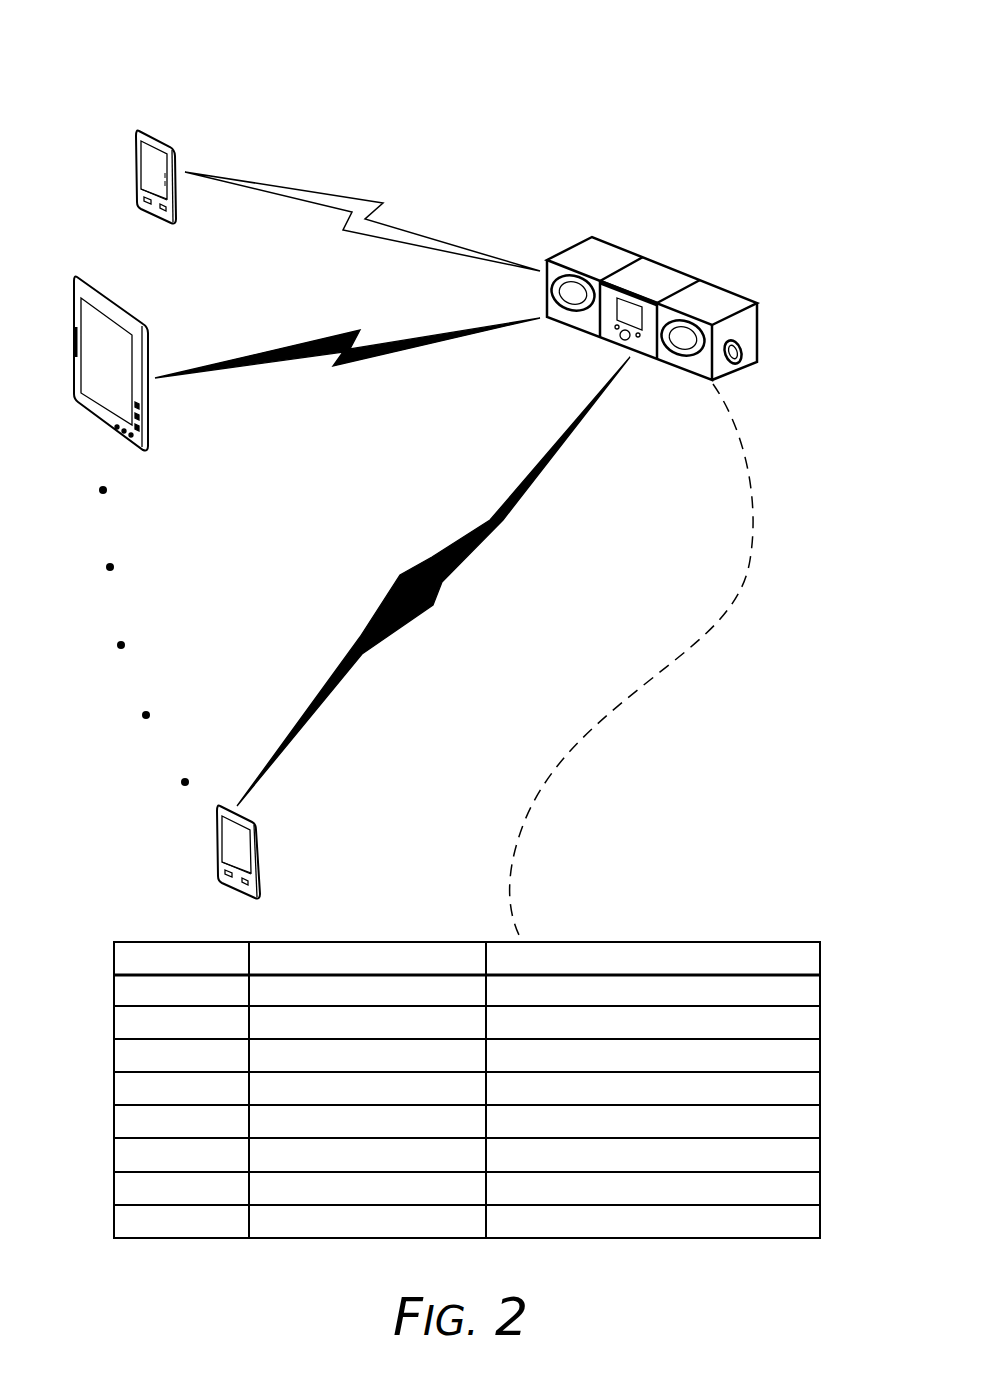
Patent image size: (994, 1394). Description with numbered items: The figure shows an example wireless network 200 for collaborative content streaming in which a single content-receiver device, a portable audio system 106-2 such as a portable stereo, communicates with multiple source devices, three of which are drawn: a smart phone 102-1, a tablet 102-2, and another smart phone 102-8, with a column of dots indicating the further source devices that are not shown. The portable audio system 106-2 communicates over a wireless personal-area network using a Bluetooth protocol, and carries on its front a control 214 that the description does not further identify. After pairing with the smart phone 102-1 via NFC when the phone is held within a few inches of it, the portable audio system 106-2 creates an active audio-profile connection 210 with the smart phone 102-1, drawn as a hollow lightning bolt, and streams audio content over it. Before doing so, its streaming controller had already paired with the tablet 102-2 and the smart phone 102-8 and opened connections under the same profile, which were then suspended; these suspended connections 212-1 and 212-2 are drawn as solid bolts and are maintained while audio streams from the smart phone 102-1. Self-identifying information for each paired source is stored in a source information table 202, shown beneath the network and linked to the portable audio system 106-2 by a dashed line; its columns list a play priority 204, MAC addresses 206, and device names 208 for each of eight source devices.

The system environment 200 is at (727, 82).
The smart phone 102-1 is at (172, 147).
The tablet computer 102-2 is at (128, 316).
The smart phone 102-8 is at (252, 822).
The A2DP connection 210 is at (338, 190).
The suspended A2DP connection 212-1 is at (415, 317).
The suspended A2DP connection 212-2 is at (405, 598).
The portable audio system 106-2 is at (725, 298).
The control knob 214 is at (619, 340).
The source information table 202 is at (468, 1063).
The play priority 204 is at (243, 969).
The MAC address column 206 is at (456, 969).
The device names 208 is at (740, 939).